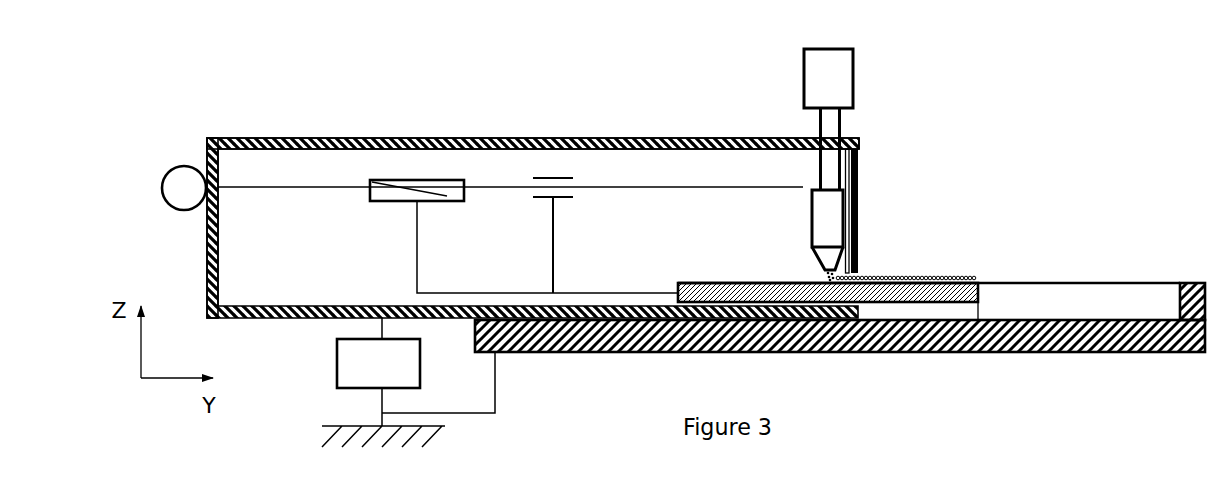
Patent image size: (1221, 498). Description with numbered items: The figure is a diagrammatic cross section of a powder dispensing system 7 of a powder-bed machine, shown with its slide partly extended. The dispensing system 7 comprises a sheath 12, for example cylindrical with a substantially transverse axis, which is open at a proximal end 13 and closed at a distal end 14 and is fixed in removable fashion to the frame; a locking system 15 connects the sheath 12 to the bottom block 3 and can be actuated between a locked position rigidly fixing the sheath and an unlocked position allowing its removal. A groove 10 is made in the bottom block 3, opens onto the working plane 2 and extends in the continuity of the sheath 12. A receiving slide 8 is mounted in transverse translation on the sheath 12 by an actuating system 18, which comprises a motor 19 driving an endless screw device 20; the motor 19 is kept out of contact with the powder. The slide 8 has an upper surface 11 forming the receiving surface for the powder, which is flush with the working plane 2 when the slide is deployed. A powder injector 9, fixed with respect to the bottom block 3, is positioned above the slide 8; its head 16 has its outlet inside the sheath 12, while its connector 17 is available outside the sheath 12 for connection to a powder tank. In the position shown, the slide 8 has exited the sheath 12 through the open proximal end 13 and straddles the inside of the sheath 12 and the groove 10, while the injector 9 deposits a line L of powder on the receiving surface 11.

The working plane 2 is at (1160, 282).
The bottom block 3 is at (1058, 353).
The powder dispensing system 7 is at (440, 130).
The receiving slide 8 is at (690, 280).
The powder injector 9 is at (805, 102).
The groove 10 is at (1132, 298).
The upper surface 11 is at (715, 282).
The sheath 12 is at (530, 132).
The proximal end 13 is at (860, 148).
The distal end 14 is at (207, 311).
The locking system 15 is at (408, 382).
The head 16 is at (812, 233).
The connector 17 is at (853, 93).
The actuating system 18 is at (325, 205).
The motor 19 is at (185, 165).
The endless screw device 20 is at (370, 199).
The line of powder L is at (943, 272).